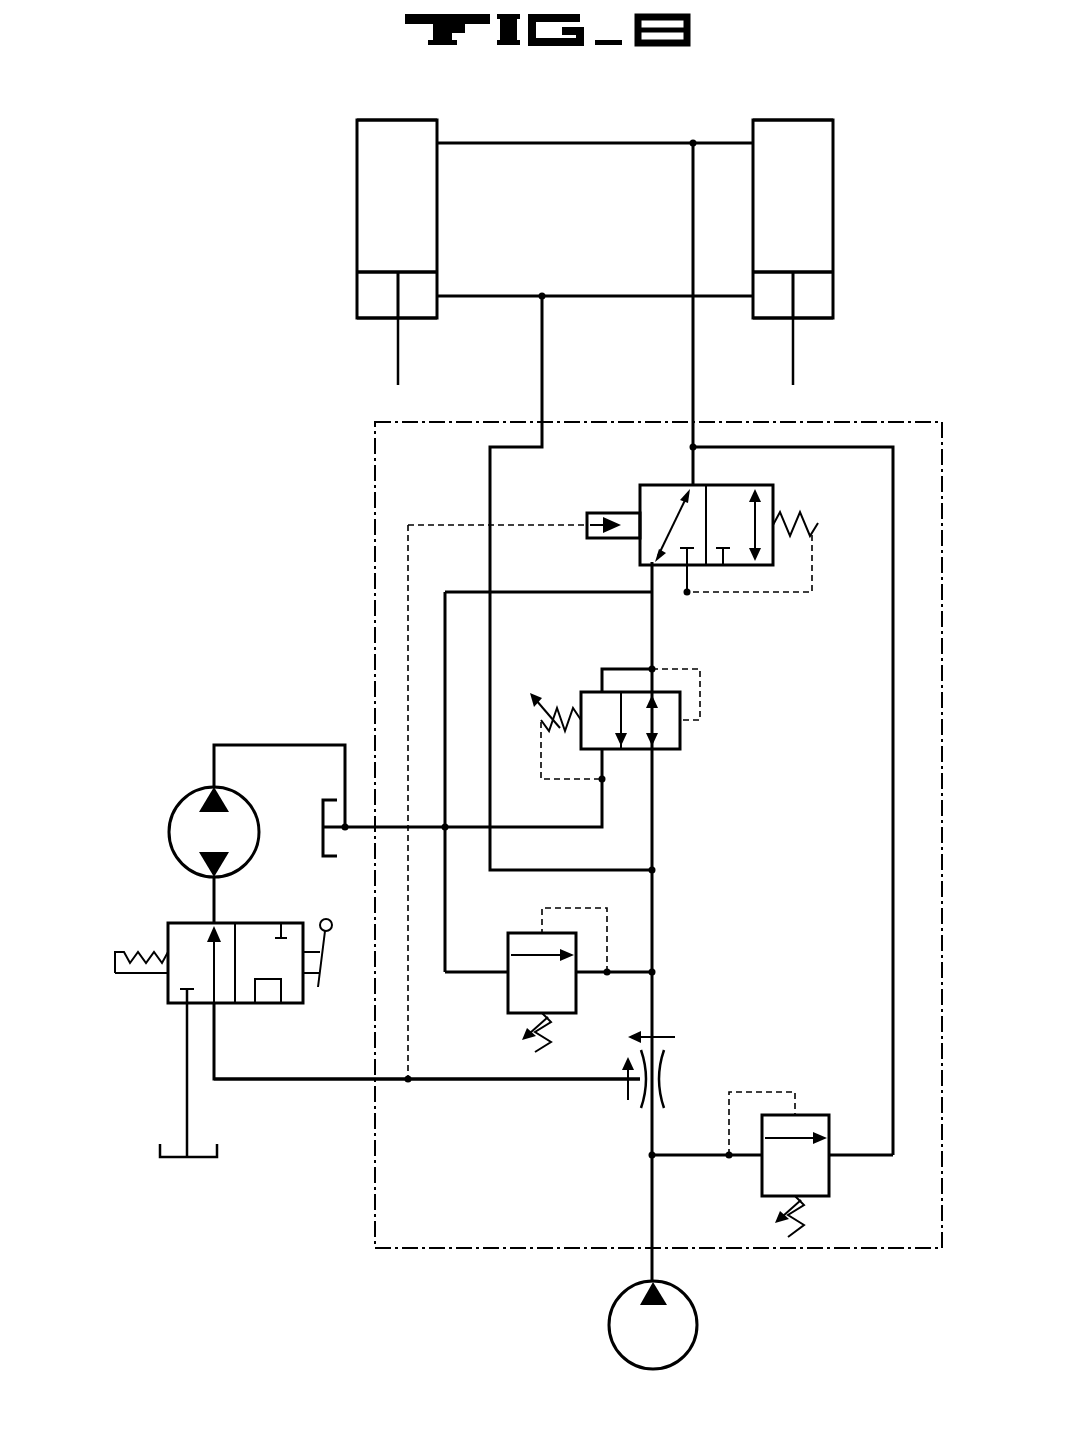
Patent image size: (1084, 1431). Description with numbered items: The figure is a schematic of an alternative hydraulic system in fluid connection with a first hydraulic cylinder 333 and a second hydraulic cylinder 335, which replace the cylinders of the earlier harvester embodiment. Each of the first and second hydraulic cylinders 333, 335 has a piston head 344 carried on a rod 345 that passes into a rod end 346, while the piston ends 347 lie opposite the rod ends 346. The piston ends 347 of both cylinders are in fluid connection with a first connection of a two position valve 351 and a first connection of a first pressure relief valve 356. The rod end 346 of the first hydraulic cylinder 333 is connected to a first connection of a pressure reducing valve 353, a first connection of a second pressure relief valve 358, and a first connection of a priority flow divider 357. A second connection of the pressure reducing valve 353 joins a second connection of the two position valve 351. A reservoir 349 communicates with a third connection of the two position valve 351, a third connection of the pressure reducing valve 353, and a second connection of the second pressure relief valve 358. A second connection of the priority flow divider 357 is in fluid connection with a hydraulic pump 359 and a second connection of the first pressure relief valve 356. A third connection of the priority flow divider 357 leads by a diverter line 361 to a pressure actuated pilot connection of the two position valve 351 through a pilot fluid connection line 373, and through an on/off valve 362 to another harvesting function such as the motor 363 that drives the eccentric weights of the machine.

The first hydraulic cylinder 333 is at (346, 188).
The second hydraulic cylinder 335 is at (844, 188).
The piston end 347 is at (393, 120).
The piston head 344 is at (375, 272).
The rod end 346 is at (365, 320).
The rod 345 is at (396, 375).
The two position valve 351 is at (775, 497).
The pilot fluid connection line 373 is at (406, 605).
The pressure reducing valve 353 is at (682, 735).
The second pressure relief valve 358 is at (507, 996).
The first pressure relief valve 356 is at (760, 1180).
The priority flow divider 357 is at (673, 1073).
The diverter line 361 is at (490, 1080).
The hydraulic pump 359 is at (697, 1318).
The motor 363 is at (176, 810).
The on/off valve 362 is at (167, 993).
The reservoir 349 is at (315, 838).